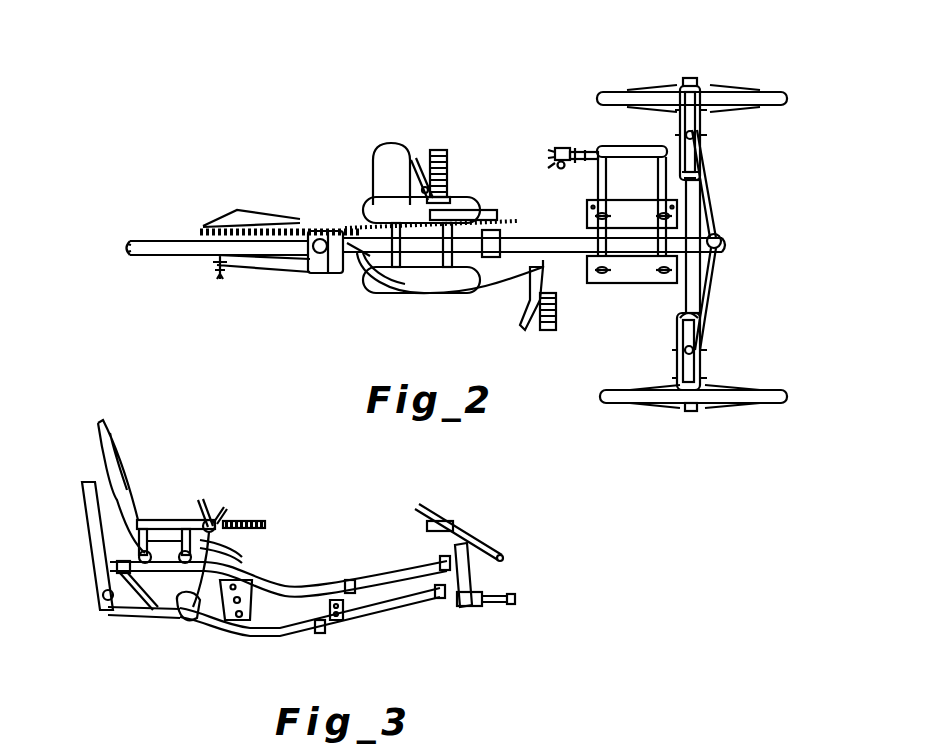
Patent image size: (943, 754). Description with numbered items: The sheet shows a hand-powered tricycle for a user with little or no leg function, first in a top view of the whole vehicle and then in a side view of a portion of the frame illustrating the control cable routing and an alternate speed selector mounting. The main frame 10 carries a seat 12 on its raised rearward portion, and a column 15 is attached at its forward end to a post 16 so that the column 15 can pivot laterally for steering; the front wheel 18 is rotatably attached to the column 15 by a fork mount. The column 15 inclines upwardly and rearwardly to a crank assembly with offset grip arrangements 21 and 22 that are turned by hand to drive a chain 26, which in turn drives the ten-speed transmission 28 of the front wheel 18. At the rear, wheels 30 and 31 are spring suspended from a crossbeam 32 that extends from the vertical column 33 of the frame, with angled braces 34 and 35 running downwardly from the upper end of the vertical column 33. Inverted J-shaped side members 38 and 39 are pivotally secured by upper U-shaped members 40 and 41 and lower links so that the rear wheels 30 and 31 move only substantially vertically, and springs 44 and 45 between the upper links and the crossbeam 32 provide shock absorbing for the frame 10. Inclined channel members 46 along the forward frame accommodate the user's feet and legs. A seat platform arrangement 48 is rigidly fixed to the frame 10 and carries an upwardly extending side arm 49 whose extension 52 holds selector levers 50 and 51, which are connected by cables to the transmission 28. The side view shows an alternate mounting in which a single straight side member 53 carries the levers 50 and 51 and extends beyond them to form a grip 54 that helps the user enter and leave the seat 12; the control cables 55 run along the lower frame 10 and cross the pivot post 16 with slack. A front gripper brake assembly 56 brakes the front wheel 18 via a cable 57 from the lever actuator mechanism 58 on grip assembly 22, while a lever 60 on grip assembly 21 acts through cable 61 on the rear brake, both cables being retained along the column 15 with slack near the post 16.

In FIG. 2, the main frame 10 is at (562, 238).
In FIG. 3, the main frame 10 is at (400, 570).
In FIG. 3, the seat 12 is at (117, 453).
In FIG. 2, the column 15 is at (360, 244).
In FIG. 3, the column 15 is at (490, 547).
In FIG. 3, the post 16 is at (473, 573).
In FIG. 2, the front wheel 18 is at (125, 248).
In FIG. 2, the offset grip arrangement 21 is at (440, 150).
In FIG. 2, the offset grip arrangement 22 is at (548, 330).
In FIG. 2, the chain 26 is at (353, 221).
In FIG. 2, the 10-speed transmission 28 is at (195, 233).
In FIG. 2, the rear wheel 30 is at (767, 398).
In FIG. 2, the rear wheel 31 is at (775, 92).
In FIG. 2, the crossbeam 32 is at (686, 288).
In FIG. 3, the crossbeam 32 is at (103, 596).
In FIG. 2, the vertical column 33 is at (722, 240).
In FIG. 3, the vertical column 33 is at (90, 520).
In FIG. 2, the angled brace 34 is at (716, 270).
In FIG. 2, the angled brace 35 is at (708, 207).
In FIG. 2, the inverted J-shaped side member 38 is at (692, 413).
In FIG. 2, the inverted J-shaped side member 39 is at (692, 78).
In FIG. 2, the U-shaped member 40 is at (706, 330).
In FIG. 2, the U-shaped member 41 is at (702, 153).
In FIG. 2, the spring 44 is at (683, 308).
In FIG. 2, the spring 45 is at (703, 170).
In FIG. 2, the channel member 46 is at (463, 200).
In FIG. 2, the seat platform arrangement 48 is at (625, 294).
In FIG. 2, the side arm 49 is at (637, 146).
In FIG. 2, the selector lever 50 is at (556, 152).
In FIG. 3, the selector lever 50 is at (200, 500).
In FIG. 2, the selector lever 51 is at (556, 163).
In FIG. 3, the selector lever 51 is at (221, 507).
In FIG. 2, the extension 52 is at (583, 152).
In FIG. 3, the straight side member 53 is at (150, 520).
In FIG. 3, the grip 54 is at (247, 519).
In FIG. 3, the control cables 55 is at (183, 618).
In FIG. 2, the front gripper brake assembly 56 is at (327, 262).
In FIG. 2, the cable 57 is at (463, 296).
In FIG. 2, the lever actuator mechanism 58 is at (525, 318).
In FIG. 2, the lever 60 is at (417, 165).
In FIG. 2, the cable 61 is at (373, 173).
In FIG. 3, the cable 61 is at (110, 567).